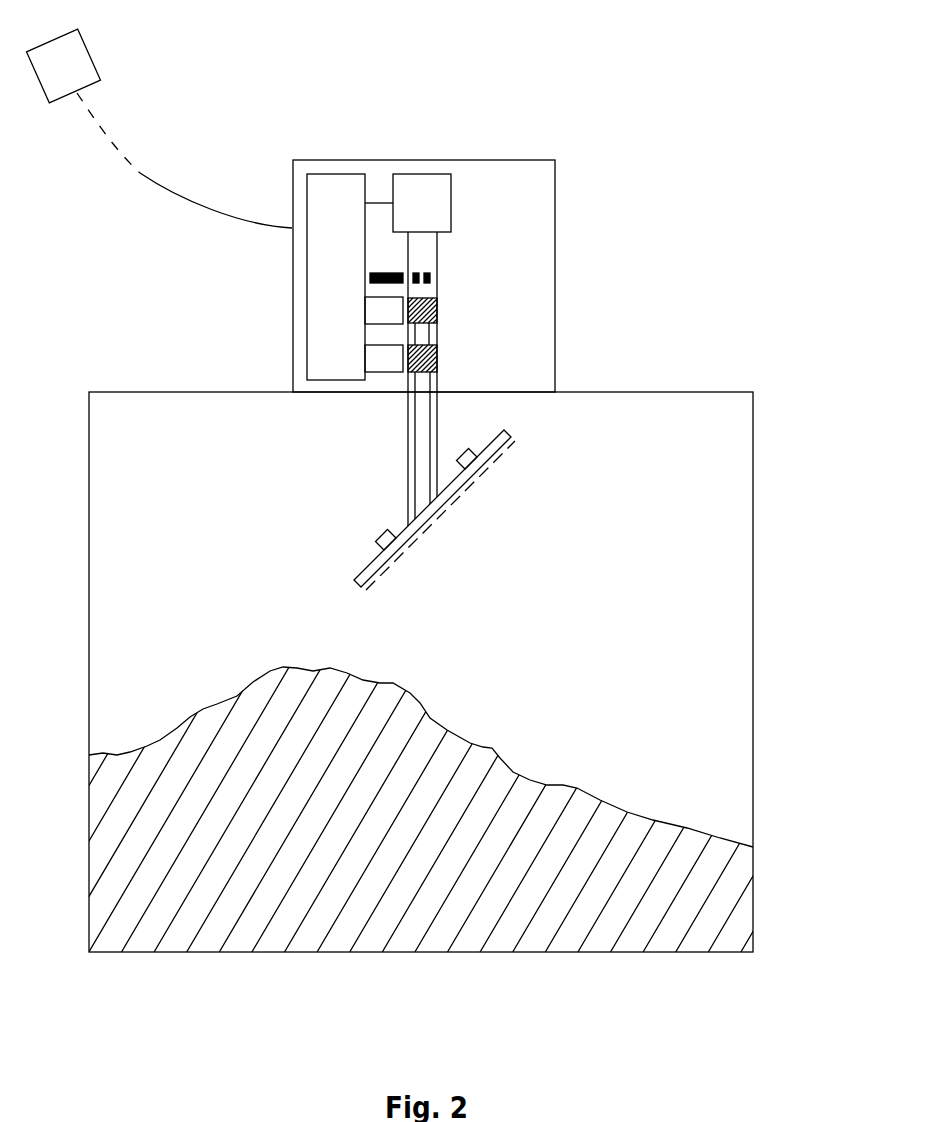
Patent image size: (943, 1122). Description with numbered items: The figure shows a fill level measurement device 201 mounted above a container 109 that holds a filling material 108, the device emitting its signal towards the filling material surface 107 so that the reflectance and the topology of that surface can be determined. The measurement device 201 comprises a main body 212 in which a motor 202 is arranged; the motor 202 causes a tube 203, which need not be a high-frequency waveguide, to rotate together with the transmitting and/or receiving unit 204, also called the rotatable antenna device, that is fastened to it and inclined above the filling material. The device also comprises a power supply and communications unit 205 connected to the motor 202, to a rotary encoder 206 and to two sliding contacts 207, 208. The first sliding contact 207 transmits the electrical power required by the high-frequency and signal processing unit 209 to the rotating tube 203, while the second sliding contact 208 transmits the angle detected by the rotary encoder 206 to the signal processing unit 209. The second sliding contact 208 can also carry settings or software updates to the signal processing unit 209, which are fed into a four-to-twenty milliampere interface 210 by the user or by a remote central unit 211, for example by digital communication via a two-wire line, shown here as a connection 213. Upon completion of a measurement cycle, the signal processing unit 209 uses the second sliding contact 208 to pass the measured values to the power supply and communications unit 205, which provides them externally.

The measurement device 201 is at (655, 120).
The motor 202 is at (451, 213).
The tube 203 is at (437, 383).
The transmitting and/or receiving unit 204 is at (504, 430).
The power supply and communications unit 205 is at (337, 174).
The rotary encoder 206 is at (383, 272).
The first sliding contact 207 is at (375, 312).
The second sliding contact 208 is at (375, 360).
The high-frequency and signal processing unit 209 is at (392, 527).
The 4-20 mA interface 210 is at (290, 228).
The remote central unit 211 is at (95, 53).
The main body 212 is at (555, 258).
The wireless signal path 213 is at (203, 210).
The filling material surface 107 is at (513, 768).
The filling material 108 is at (495, 888).
The container 109 is at (753, 690).